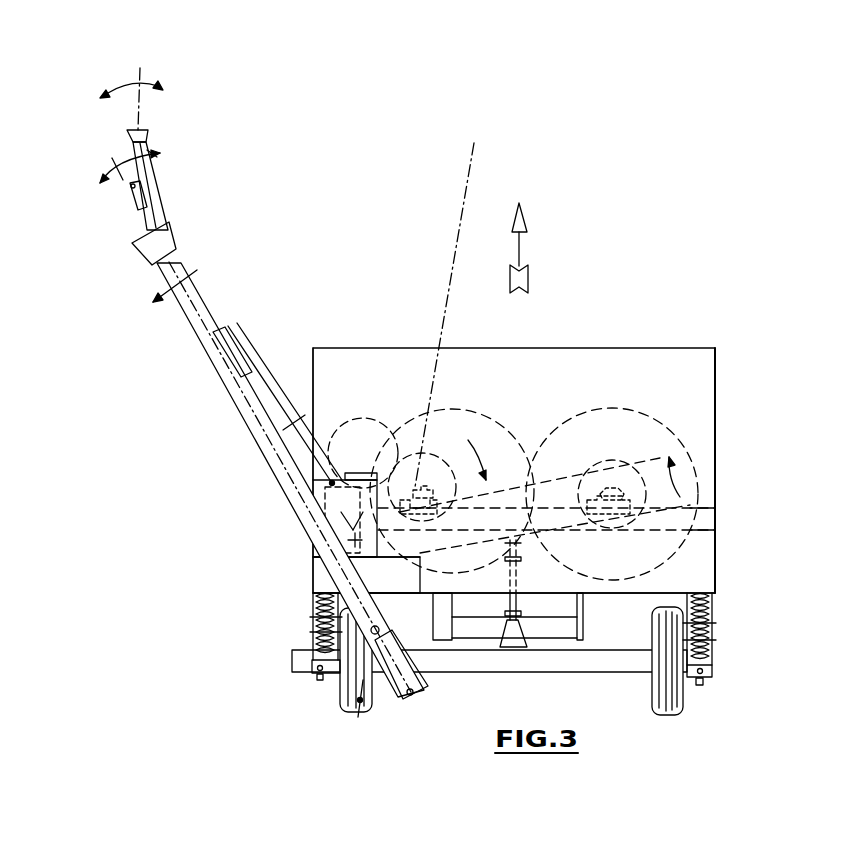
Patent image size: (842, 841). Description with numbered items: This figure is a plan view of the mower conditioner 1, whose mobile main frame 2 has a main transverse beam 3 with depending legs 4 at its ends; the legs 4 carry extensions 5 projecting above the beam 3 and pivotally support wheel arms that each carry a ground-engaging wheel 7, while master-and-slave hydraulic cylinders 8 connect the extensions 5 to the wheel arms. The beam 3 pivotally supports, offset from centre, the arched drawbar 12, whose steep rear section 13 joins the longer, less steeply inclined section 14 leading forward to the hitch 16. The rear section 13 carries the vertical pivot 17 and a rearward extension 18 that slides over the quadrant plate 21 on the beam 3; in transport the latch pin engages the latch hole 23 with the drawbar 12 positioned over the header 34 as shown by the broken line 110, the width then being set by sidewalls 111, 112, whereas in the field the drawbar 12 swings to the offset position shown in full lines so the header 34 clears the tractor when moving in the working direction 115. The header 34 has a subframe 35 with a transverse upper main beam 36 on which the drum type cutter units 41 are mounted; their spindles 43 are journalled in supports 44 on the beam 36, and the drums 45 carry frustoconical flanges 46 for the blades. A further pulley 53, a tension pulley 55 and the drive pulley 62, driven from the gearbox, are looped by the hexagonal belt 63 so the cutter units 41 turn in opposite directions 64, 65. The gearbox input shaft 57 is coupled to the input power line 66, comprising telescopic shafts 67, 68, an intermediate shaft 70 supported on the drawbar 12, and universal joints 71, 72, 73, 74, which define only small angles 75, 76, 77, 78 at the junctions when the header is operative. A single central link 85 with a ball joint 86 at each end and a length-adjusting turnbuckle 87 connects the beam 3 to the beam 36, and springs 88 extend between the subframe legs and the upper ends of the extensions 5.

The mower conditioner 1 is at (742, 577).
The mobile main frame 2 is at (518, 650).
The main transverse beam 3 is at (578, 673).
The depending legs 4 is at (313, 630).
The extensions 5 is at (312, 664).
The ground-engaging wheel 7 is at (340, 707).
The hydraulic cylinders 8 is at (320, 681).
The arched drawbar 12 is at (313, 492).
The rear section 13 is at (313, 584).
The section 14 is at (233, 403).
The hitch 16 is at (133, 190).
The vertical pivot 17 is at (405, 645).
The extension 18 is at (412, 695).
The quadrant plate 21 is at (380, 698).
The latch hole 23 is at (362, 703).
The header 34 is at (742, 440).
The subframe 35 is at (713, 499).
The transverse upper main beam 36 is at (713, 531).
The drum type cutter units 41 is at (432, 462).
The spindles 43 is at (430, 460).
The supports 44 is at (474, 440).
The drums 45 is at (396, 410).
The frustoconical flanges 46 is at (407, 455).
The further pulley 53 is at (337, 424).
The tension pulley 55 is at (481, 603).
The input shaft 57 is at (322, 524).
The drive pulley 62 is at (318, 566).
The hexagonal belt 63 is at (575, 538).
The direction 64 is at (487, 452).
The direction 65 is at (681, 486).
The input power line 66 is at (254, 392).
The telescopic shaft 67 is at (148, 187).
The telescopic shaft 68 is at (322, 460).
The intermediate shaft 70 is at (192, 309).
The universal joint 71 is at (143, 138).
The universal joint 72 is at (135, 242).
The universal joint 73 is at (226, 361).
The universal joint 74 is at (330, 483).
The angle 75 is at (140, 78).
The angle 76 is at (120, 160).
The angle 77 is at (155, 282).
The angle 78 is at (290, 425).
The central link 85 is at (518, 614).
The ball joint 86 is at (516, 562).
The turnbuckle 87 is at (517, 600).
The springs 88 is at (316, 606).
The broken line 110 is at (472, 150).
The sidewall 111 is at (314, 349).
The sidewall 112 is at (716, 378).
The working direction 115 is at (519, 254).